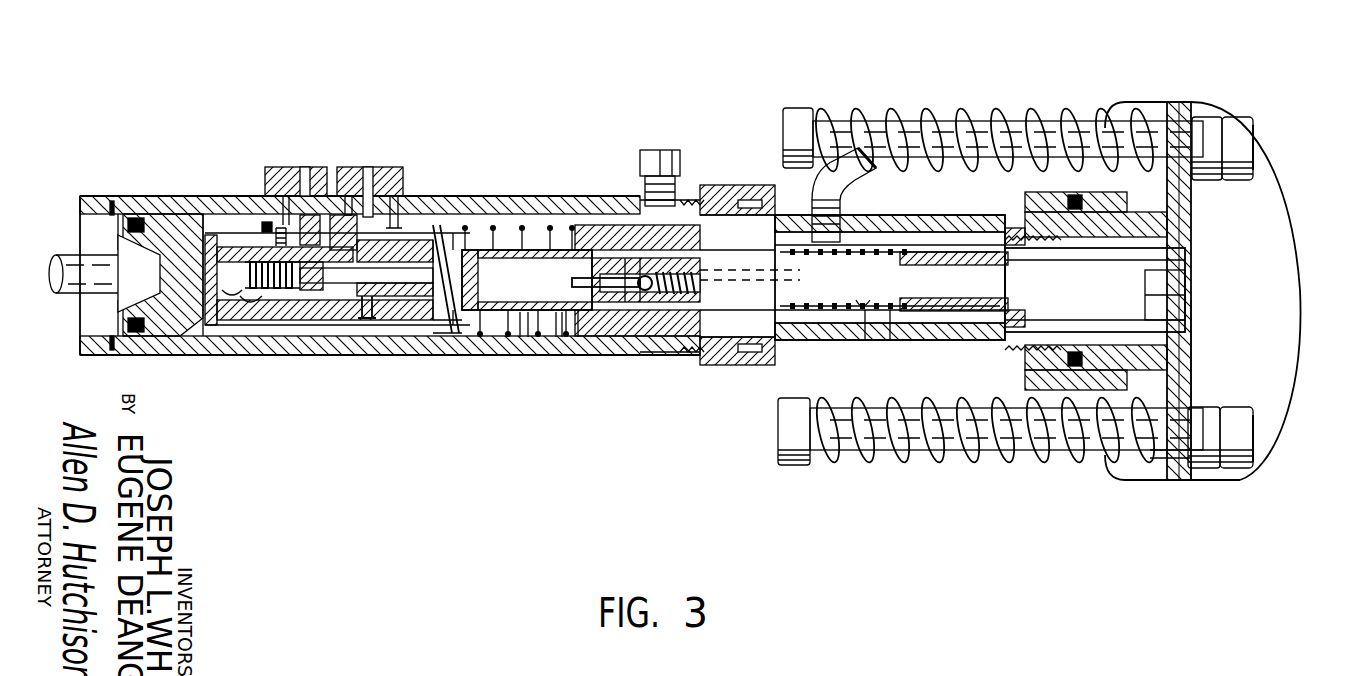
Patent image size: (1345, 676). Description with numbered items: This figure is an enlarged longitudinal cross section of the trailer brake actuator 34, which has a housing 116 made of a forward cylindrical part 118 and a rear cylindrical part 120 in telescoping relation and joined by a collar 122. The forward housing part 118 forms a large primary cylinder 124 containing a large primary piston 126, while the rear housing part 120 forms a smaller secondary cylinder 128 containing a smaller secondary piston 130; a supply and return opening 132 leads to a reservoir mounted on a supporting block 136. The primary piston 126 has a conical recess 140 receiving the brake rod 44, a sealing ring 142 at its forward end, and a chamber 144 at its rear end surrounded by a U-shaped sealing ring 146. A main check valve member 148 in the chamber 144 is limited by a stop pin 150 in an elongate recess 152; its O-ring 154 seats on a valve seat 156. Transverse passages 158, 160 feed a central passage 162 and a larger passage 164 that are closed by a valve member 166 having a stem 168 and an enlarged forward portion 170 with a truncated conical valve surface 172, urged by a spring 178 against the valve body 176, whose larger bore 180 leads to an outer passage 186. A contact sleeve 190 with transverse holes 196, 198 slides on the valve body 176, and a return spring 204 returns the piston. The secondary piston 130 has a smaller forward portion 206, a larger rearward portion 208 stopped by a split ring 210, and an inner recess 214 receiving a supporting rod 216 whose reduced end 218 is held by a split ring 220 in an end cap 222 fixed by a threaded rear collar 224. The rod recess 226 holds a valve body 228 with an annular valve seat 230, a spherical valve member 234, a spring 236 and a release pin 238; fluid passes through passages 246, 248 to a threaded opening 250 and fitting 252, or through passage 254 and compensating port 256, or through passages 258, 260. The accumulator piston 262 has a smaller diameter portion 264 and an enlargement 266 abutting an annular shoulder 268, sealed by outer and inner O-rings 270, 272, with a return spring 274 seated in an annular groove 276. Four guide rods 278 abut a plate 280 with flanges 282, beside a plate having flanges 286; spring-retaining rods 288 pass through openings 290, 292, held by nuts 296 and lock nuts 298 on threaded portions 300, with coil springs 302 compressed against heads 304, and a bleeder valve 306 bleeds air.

The trailer brake actuator 34 is at (622, 400).
The brake rod 44 is at (95, 255).
The housing 116 is at (578, 195).
The forward housing part 118 is at (565, 197).
The rear housing part 120 is at (930, 225).
The collar 122 is at (733, 190).
The primary cylinder 124 is at (520, 196).
The primary piston 126 is at (280, 215).
The secondary cylinder 128 is at (862, 225).
The secondary piston 130 is at (630, 228).
The supply and return opening 132 is at (330, 195).
The supporting block 136 is at (283, 196).
The conical recess 140 is at (120, 250).
The sealing ring 142 is at (130, 355).
The chamber 144 is at (300, 322).
The sealing ring 146 is at (372, 340).
The main check valve member 148 is at (322, 310).
The stop pin 150 is at (310, 195).
The elongate recess 152 is at (265, 228).
The O-ring 154 is at (258, 358).
The valve seat 156 is at (272, 356).
The transverse passage 158 is at (215, 352).
The transverse passage 160 is at (210, 265).
The central passage 162 is at (220, 225).
The larger passage 164 is at (292, 322).
The valve member 166 is at (412, 330).
The valve stem 168 is at (360, 195).
The enlarged forward portion 170 is at (372, 310).
The truncated conical valve surface 172 is at (382, 300).
The valve body 176 is at (428, 340).
The spring 178 is at (345, 310).
The larger bore 180 is at (373, 168).
The outer passage 186 is at (458, 330).
The contact sleeve 190 is at (395, 167).
The transverse hole 196 is at (420, 330).
The transverse hole 198 is at (378, 168).
The return spring 204 is at (520, 338).
The smaller forward portion 206 is at (538, 338).
The larger rearward portion 208 is at (570, 338).
The split ring 210 is at (562, 338).
The inner recess 214 is at (556, 338).
The supporting rod 216 is at (893, 262).
The reduced diameter end 218 is at (1195, 305).
The split ring 220 is at (1185, 282).
The end cap 222 is at (1195, 372).
The threaded rear collar 224 is at (1020, 440).
The longitudinally-extending recess 226 is at (722, 340).
The valve body 228 is at (642, 340).
The annular valve seat 230 is at (650, 340).
The spherical valve member 234 is at (668, 310).
The spring 236 is at (722, 372).
The release pin 238 is at (576, 282).
The longitudinally-extending passage 246 is at (765, 298).
The transverse passage 248 is at (790, 272).
The threaded opening 250 is at (835, 240).
The fitting 252 is at (815, 185).
The longitudinally-extending passage 254 is at (637, 205).
The compensating port 256 is at (690, 210).
The transverse passage 258 is at (528, 338).
The transverse passage 260 is at (465, 228).
The annular piston 262 is at (850, 322).
The smaller diameter portion 264 is at (958, 322).
The enlargement 266 is at (1015, 245).
The annular shoulder 268 is at (890, 342).
The outer O-ring 270 is at (870, 318).
The inner O-ring 272 is at (900, 312).
The return spring 274 is at (718, 195).
The annular groove 276 is at (855, 312).
The guide rods 278 is at (1030, 376).
The diamond shaped plate 280 is at (1195, 322).
The flanges 282 is at (1290, 185).
The flanges 286 is at (1080, 468).
The spring-retaining rods 288 is at (932, 140).
The opening 290 is at (1168, 480).
The opening 292 is at (1160, 470).
The nuts 296 is at (1207, 117).
The lock nuts 298 is at (1240, 118).
The threaded portions 300 is at (1255, 465).
The coil springs 302 is at (1065, 130).
The heads 304 is at (790, 465).
The bleeder valve 306 is at (647, 185).